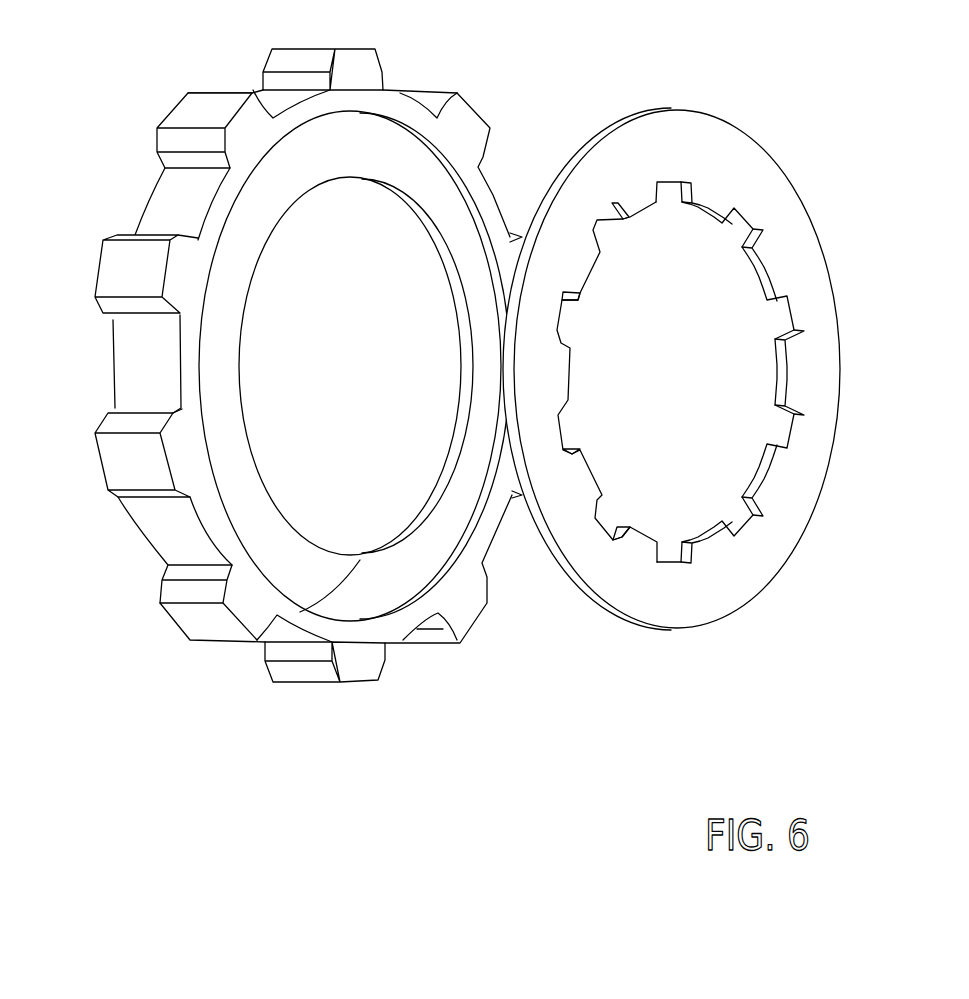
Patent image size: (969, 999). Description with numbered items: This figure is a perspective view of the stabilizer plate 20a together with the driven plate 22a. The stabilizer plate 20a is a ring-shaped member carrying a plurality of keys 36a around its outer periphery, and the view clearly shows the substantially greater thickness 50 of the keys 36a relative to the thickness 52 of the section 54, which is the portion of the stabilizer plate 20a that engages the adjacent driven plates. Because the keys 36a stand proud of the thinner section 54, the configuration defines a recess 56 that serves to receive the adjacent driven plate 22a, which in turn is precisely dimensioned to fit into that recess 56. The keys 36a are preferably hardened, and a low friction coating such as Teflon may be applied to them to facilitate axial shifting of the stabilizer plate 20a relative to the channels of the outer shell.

The stabilizer plate 20a is at (168, 208).
The driven plate 22a is at (790, 243).
The key 36a is at (212, 105).
The thickness of the keys 50 is at (100, 268).
The thickness of the section 52 is at (486, 272).
The section 54 is at (218, 405).
The recess 56 is at (403, 605).